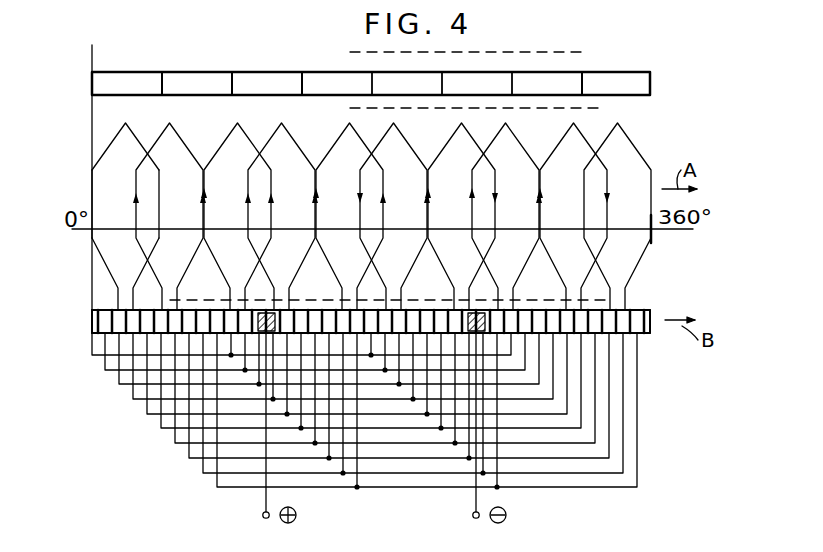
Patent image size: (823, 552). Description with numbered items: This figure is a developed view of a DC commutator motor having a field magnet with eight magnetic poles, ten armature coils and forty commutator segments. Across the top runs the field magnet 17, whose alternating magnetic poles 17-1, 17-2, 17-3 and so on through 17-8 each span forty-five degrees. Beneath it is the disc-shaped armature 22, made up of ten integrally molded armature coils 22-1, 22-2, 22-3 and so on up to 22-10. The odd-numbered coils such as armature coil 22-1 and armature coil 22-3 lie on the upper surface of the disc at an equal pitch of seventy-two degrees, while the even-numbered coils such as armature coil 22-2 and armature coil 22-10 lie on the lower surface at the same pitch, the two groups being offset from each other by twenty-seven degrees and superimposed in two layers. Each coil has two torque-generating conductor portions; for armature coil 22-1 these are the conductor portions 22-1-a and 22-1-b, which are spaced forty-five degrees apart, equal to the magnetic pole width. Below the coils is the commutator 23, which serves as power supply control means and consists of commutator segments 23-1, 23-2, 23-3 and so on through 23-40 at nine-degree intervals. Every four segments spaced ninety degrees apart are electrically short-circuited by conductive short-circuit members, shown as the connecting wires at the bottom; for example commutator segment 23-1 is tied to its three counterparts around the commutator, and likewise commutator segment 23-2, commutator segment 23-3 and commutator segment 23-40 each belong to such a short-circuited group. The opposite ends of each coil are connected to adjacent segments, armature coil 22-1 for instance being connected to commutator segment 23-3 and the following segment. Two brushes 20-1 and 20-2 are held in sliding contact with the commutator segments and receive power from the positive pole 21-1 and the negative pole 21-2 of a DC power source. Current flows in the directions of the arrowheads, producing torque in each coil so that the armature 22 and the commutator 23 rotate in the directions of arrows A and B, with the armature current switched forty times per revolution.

The field magnet 17 is at (652, 83).
The magnetic pole 17-1 is at (108, 74).
The magnetic pole 17-2 is at (178, 74).
The magnetic pole 17-3 is at (247, 74).
The magnetic pole 17-8 is at (590, 74).
The armature 22 is at (396, 205).
The armature coil 22-1 is at (97, 205).
The conductor portion 22-1-a is at (92, 172).
The conductor portion 22-1-b is at (159, 187).
The armature coil 22-2 is at (176, 131).
The armature coil 22-3 is at (245, 131).
The armature coil 22-10 is at (621, 128).
The commutator 23 is at (387, 331).
The commutator segment 23-1 is at (92, 323).
The commutator segment 23-2 is at (98, 316).
The commutator segment 23-3 is at (117, 326).
The commutator segment 23-40 is at (637, 313).
The brush 20-1 is at (271, 316).
The brush 20-2 is at (480, 316).
The positive pole 21-1 is at (261, 518).
The negative pole 21-2 is at (472, 518).